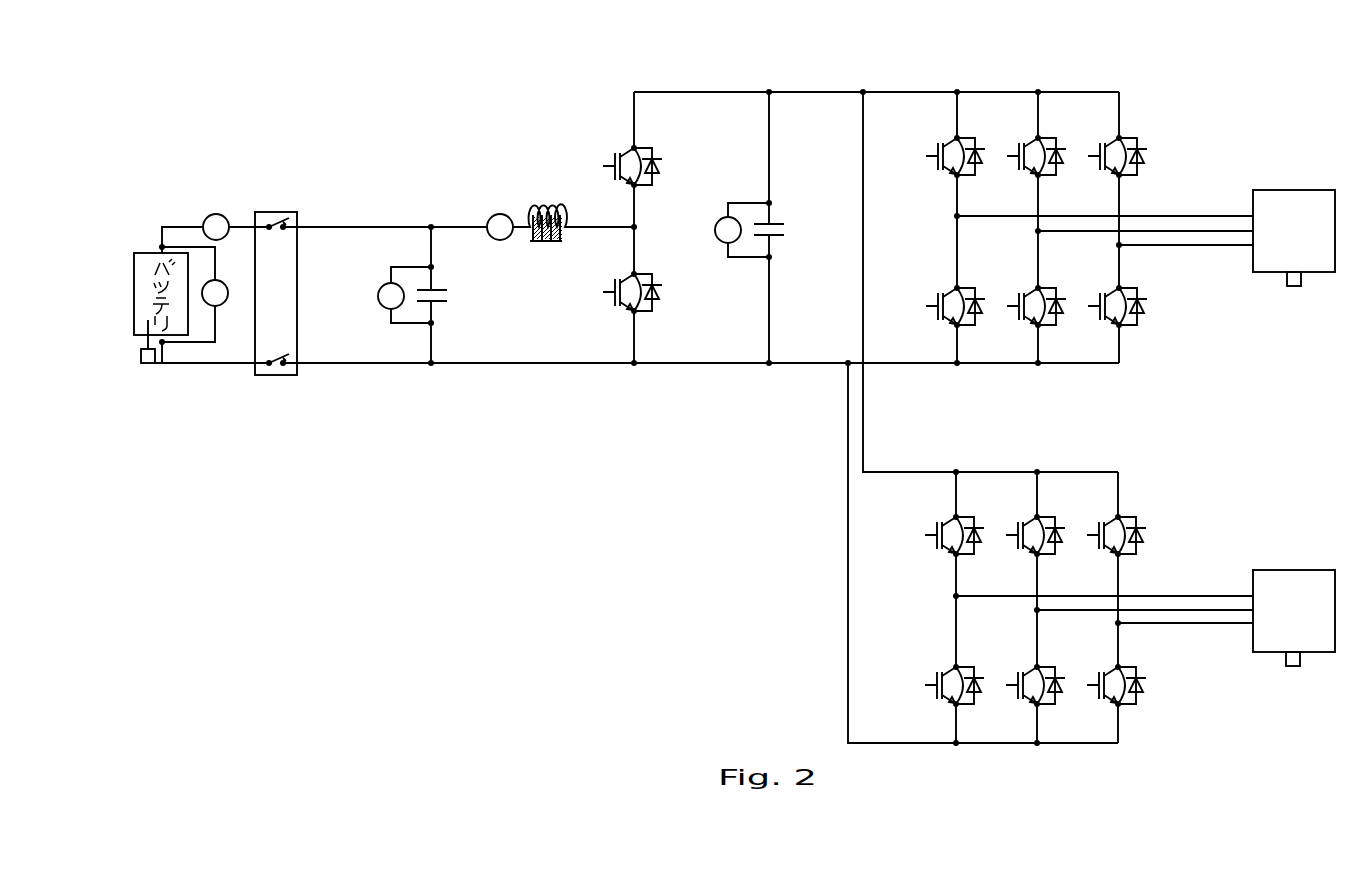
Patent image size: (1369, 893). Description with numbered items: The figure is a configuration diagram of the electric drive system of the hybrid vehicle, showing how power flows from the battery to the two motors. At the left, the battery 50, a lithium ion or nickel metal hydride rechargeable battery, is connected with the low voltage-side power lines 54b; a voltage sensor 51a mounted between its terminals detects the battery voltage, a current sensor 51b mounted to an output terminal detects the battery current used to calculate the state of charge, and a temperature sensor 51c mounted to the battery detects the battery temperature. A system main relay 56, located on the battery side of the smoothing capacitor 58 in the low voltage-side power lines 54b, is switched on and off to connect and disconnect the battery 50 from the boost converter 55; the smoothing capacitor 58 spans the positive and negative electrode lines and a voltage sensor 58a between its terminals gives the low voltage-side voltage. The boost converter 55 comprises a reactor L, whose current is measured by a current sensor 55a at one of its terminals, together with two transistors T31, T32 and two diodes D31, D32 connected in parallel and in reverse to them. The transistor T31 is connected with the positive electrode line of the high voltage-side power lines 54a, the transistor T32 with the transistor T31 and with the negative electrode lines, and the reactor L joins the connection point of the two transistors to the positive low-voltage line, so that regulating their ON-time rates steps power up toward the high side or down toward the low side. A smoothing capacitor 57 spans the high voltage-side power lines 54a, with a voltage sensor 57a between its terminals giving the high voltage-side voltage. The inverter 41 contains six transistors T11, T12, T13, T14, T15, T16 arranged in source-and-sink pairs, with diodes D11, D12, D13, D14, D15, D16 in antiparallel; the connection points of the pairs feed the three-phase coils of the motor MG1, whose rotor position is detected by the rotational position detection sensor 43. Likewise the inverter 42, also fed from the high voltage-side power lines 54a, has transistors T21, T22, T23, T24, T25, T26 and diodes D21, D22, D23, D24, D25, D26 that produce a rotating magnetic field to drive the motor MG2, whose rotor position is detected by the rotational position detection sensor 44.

The battery 50 is at (148, 250).
The voltage sensor 51a is at (219, 307).
The current sensor 51b is at (213, 213).
The temperature sensor 51c is at (147, 364).
The system main relay 56 is at (277, 212).
The low voltage-side power lines 54b is at (337, 229).
The smoothing capacitor 58 is at (440, 290).
The voltage sensor 58a is at (391, 283).
The current sensor 55a is at (500, 214).
The reactor L is at (548, 215).
The boost converter 55 is at (593, 80).
The transistor T31 is at (615, 160).
The diode D31 is at (653, 174).
The transistor T32 is at (615, 286).
The diode D32 is at (653, 300).
The smoothing capacitor 57 is at (771, 215).
The voltage sensor 57a is at (722, 207).
The high voltage-side power lines 54a is at (837, 97).
The inverter 41 is at (1038, 82).
The transistor T11 is at (938, 150).
The transistor T12 is at (1019, 150).
The transistor T13 is at (1100, 150).
The transistor T14 is at (938, 300).
The transistor T15 is at (1019, 300).
The transistor T16 is at (1100, 300).
The diode D11 is at (976, 164).
The diode D12 is at (1057, 164).
The diode D13 is at (1138, 164).
The diode D14 is at (976, 314).
The diode D15 is at (1057, 314).
The diode D16 is at (1138, 314).
The motor MG1 is at (1293, 190).
The rotational position detection sensor 43 is at (1293, 290).
The inverter 42 is at (1038, 462).
The transistor T21 is at (937, 529).
The transistor T22 is at (1018, 529).
The transistor T23 is at (1099, 529).
The transistor T24 is at (937, 679).
The transistor T25 is at (1018, 679).
The transistor T26 is at (1099, 679).
The diode D21 is at (975, 543).
The diode D22 is at (1056, 543).
The diode D23 is at (1137, 543).
The diode D24 is at (975, 693).
The diode D25 is at (1056, 693).
The diode D26 is at (1137, 693).
The motor MG2 is at (1293, 570).
The rotational position detection sensor 44 is at (1292, 670).